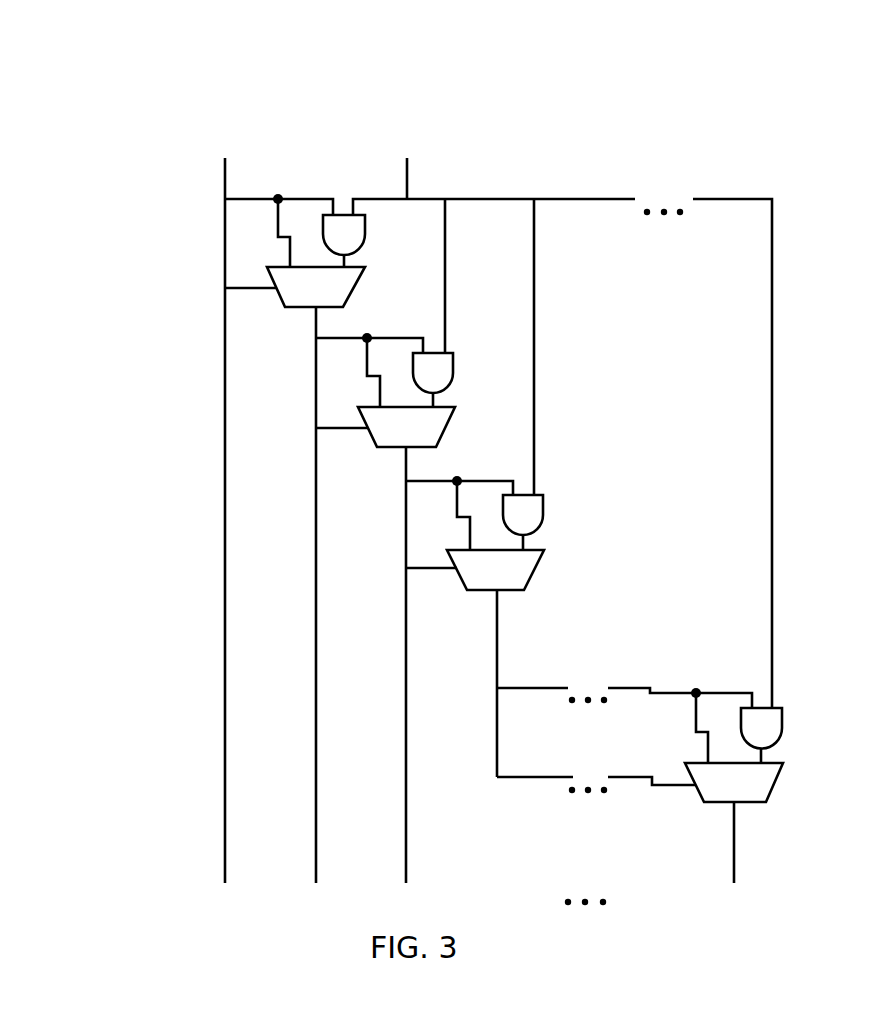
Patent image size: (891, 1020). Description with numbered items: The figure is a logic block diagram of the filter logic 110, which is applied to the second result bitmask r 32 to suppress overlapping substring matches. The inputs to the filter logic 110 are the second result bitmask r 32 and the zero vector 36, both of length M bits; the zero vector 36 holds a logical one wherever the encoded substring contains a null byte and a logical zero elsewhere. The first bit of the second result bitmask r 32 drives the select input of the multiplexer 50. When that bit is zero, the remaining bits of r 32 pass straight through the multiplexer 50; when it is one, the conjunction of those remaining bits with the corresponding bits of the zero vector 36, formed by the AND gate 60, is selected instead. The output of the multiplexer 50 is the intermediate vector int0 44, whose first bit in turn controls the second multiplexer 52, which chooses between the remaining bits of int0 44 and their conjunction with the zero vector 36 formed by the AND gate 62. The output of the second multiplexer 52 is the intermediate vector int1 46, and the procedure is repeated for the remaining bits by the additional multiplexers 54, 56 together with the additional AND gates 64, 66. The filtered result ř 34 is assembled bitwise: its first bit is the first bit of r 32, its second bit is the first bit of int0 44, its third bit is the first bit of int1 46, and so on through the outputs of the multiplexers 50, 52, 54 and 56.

The filter logic 110 is at (96, 128).
The second result bitmask r 32 is at (200, 124).
The zero vector 36 is at (370, 124).
The filtered result ř 34 is at (200, 902).
The intermediate vector int0 44 is at (316, 325).
The intermediate vector int1 46 is at (406, 464).
The multiplexer 50 is at (362, 279).
The second multiplexer 52 is at (450, 421).
The additional multiplexer 54 is at (540, 569).
The additional multiplexer 56 is at (778, 787).
The AND gate 60 is at (364, 243).
The additional AND gate 62 is at (453, 375).
The additional AND gate 64 is at (543, 515).
The additional AND gate 66 is at (782, 726).